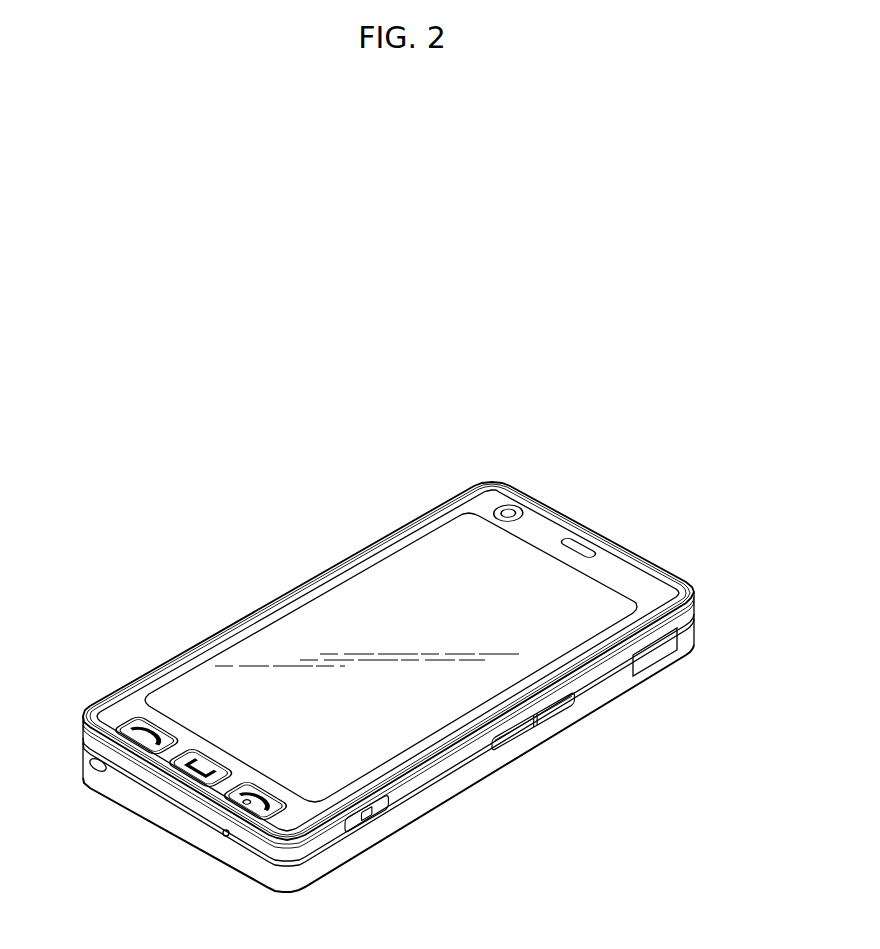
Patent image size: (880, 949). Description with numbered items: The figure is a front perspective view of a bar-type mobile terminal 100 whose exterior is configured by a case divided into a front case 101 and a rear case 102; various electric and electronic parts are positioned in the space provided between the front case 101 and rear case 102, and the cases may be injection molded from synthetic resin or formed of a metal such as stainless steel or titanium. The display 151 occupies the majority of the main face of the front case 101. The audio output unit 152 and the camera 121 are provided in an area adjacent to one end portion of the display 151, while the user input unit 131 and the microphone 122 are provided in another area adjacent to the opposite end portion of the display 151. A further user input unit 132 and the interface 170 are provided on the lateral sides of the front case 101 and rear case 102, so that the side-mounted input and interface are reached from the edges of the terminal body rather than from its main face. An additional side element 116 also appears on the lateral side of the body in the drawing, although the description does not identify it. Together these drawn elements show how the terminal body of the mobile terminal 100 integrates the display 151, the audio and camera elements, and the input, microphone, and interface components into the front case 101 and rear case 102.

The mobile terminal 100 is at (366, 523).
The front case 101 is at (690, 618).
The rear case 102 is at (690, 640).
The display 151 is at (333, 603).
The user input unit 131 is at (130, 723).
The camera 121 is at (512, 512).
The audio output unit 152 is at (577, 548).
The side key / button 116 is at (105, 768).
The microphone 122 is at (223, 835).
The user input unit 132 is at (517, 740).
The interface 170 is at (652, 658).